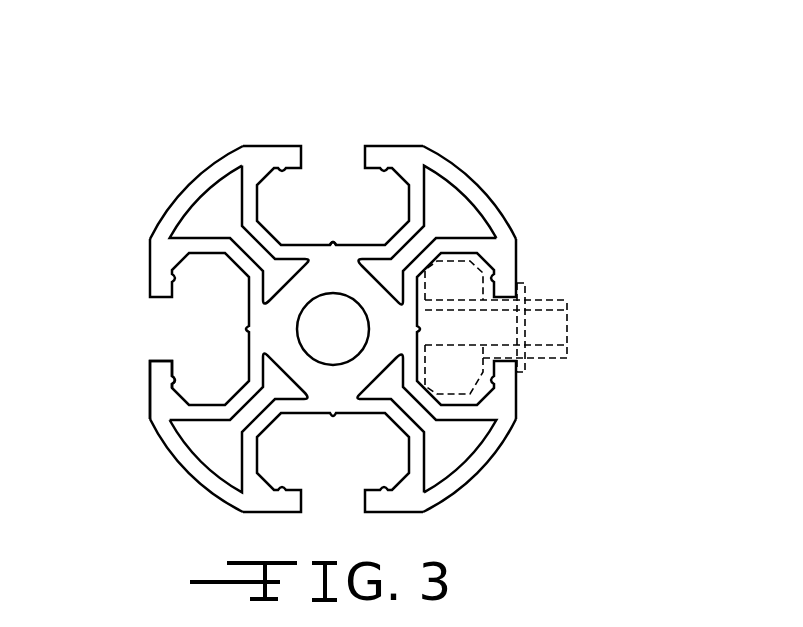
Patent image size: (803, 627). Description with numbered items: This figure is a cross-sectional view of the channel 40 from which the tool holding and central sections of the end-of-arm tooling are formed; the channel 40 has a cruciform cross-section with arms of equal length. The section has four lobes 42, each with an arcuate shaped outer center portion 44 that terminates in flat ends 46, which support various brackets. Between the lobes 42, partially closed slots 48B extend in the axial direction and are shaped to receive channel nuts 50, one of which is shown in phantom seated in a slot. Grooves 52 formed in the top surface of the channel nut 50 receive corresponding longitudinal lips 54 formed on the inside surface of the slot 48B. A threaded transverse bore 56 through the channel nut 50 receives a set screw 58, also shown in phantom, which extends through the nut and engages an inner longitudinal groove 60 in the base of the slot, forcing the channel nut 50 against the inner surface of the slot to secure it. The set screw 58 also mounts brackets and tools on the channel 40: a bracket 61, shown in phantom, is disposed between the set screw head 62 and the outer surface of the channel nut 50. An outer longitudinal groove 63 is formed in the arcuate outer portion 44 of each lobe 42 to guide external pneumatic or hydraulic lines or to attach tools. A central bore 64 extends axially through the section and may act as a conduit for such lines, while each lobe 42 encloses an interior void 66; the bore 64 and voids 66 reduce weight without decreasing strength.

The channel 40 is at (539, 96).
The lobe 42 is at (240, 140).
The arcuate shaped outer center portion 44 is at (157, 433).
The flat end 46 is at (150, 382).
The partially closed slot 48B is at (231, 341).
The channel nut 50 is at (499, 305).
The groove 52 is at (483, 363).
The longitudinal lip 54 is at (307, 172).
The threaded transverse bore 56 is at (466, 313).
The set screw 58 is at (482, 342).
The inner longitudinal groove 60 is at (332, 237).
The bracket 61 is at (529, 283).
The set screw head 62 is at (546, 364).
The outer longitudinal groove 63 is at (488, 192).
The central bore 64 is at (299, 318).
The interior void 66 is at (227, 214).